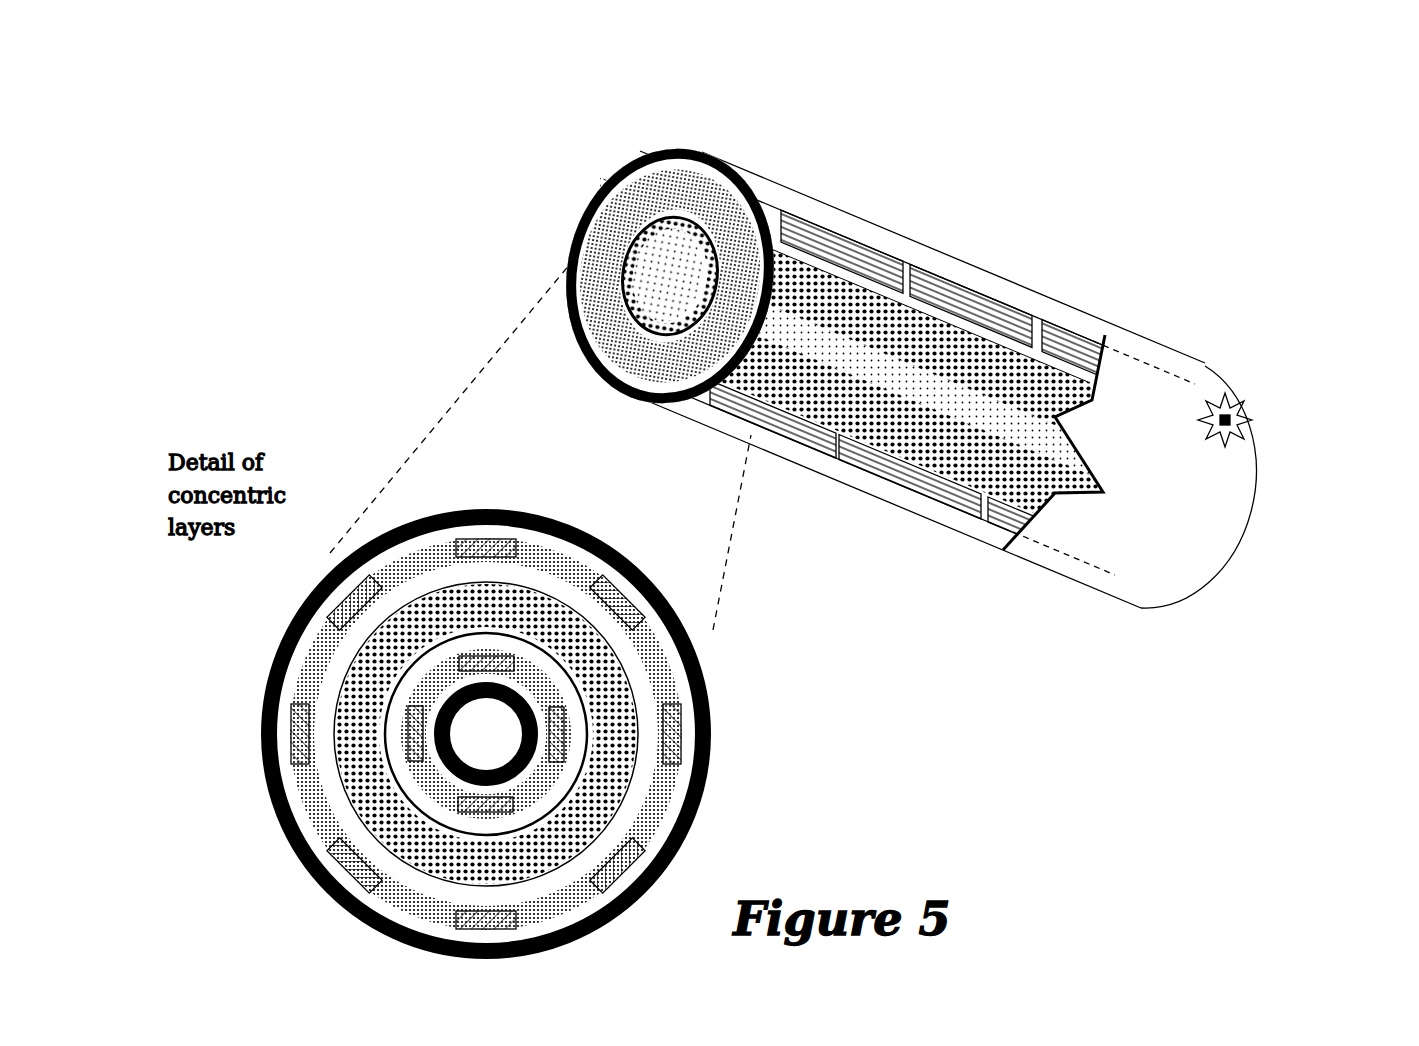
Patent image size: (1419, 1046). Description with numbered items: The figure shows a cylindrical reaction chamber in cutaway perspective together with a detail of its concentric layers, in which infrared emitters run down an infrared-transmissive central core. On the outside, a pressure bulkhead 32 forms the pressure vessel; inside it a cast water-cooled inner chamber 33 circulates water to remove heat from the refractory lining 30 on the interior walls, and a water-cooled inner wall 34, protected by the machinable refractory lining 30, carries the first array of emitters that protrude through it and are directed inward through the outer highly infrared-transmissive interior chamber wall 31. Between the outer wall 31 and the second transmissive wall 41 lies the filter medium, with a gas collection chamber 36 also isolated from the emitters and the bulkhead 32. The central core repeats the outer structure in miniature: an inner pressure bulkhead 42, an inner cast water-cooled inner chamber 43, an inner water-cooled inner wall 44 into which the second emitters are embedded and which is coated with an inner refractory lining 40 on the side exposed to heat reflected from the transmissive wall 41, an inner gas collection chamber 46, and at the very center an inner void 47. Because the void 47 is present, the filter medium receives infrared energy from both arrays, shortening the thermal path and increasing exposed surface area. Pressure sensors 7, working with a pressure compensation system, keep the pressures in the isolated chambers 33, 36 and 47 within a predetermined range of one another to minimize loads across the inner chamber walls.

The pressure sensor 7 is at (1268, 428).
The refractory lining 30 is at (608, 238).
The highly infrared-transmissive interior chamber wall 31 is at (660, 200).
The pressure bulkhead 32 is at (582, 262).
The cast water-cooled inner chamber 33 is at (585, 322).
The water-cooled inner wall 34 is at (622, 212).
The gas collection chamber 36 is at (600, 245).
The inner refractory lining 40 is at (590, 810).
The highly infrared-transmissive interior chamber wall 41 is at (605, 836).
The inner pressure bulkhead 42 is at (532, 709).
The inner cast water-cooled inner chamber 43 is at (505, 683).
The water-cooled inner wall 44 is at (548, 793).
The inner gas collection chamber 46 is at (543, 766).
The inner void 47 is at (675, 268).